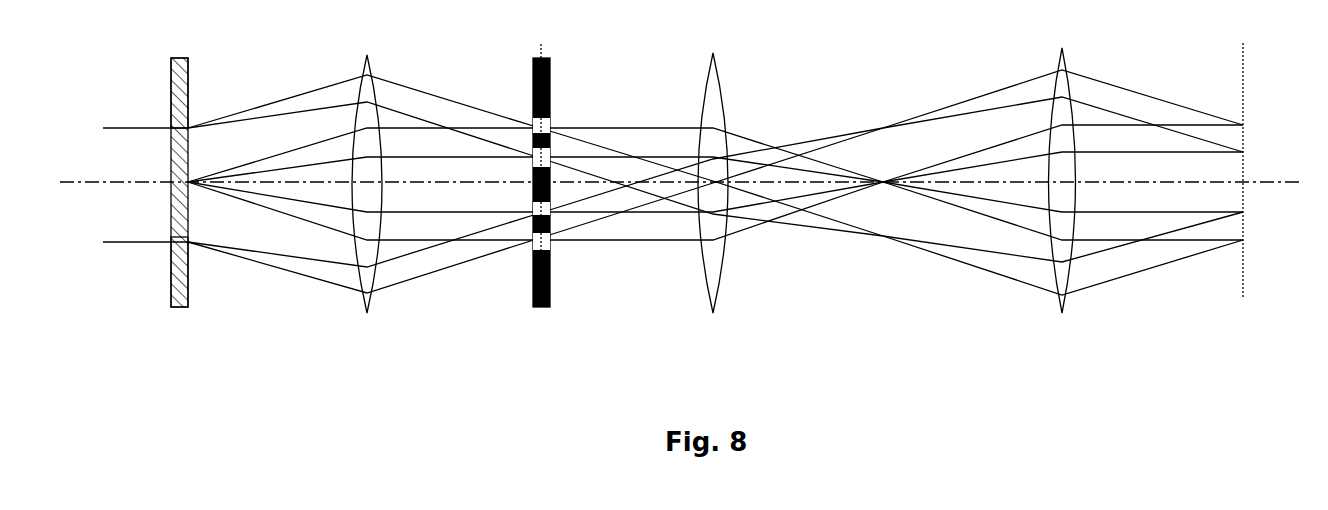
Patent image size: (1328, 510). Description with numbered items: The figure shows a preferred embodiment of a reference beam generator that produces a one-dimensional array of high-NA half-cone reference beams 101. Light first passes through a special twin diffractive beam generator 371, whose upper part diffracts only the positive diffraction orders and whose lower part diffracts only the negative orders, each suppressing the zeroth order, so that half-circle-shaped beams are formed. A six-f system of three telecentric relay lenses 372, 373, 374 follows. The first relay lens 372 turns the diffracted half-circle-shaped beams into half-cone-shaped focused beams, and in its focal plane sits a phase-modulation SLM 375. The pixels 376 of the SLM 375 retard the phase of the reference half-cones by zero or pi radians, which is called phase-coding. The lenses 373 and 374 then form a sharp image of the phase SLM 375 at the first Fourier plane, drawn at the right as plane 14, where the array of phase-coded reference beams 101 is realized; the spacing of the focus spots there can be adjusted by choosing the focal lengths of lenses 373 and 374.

The special twin diffractive beam generator 371 is at (183, 318).
The telecentric relay lens 372 is at (370, 173).
The telecentric relay lens 373 is at (713, 172).
The telecentric relay lens 374 is at (1062, 170).
The phase-modulation SLM 375 is at (548, 309).
The pixels of the phase-SLM 376 is at (558, 150).
The image plane / reticle 14 is at (1246, 187).
The high-NA half-cone reference beams 101 is at (1247, 123).